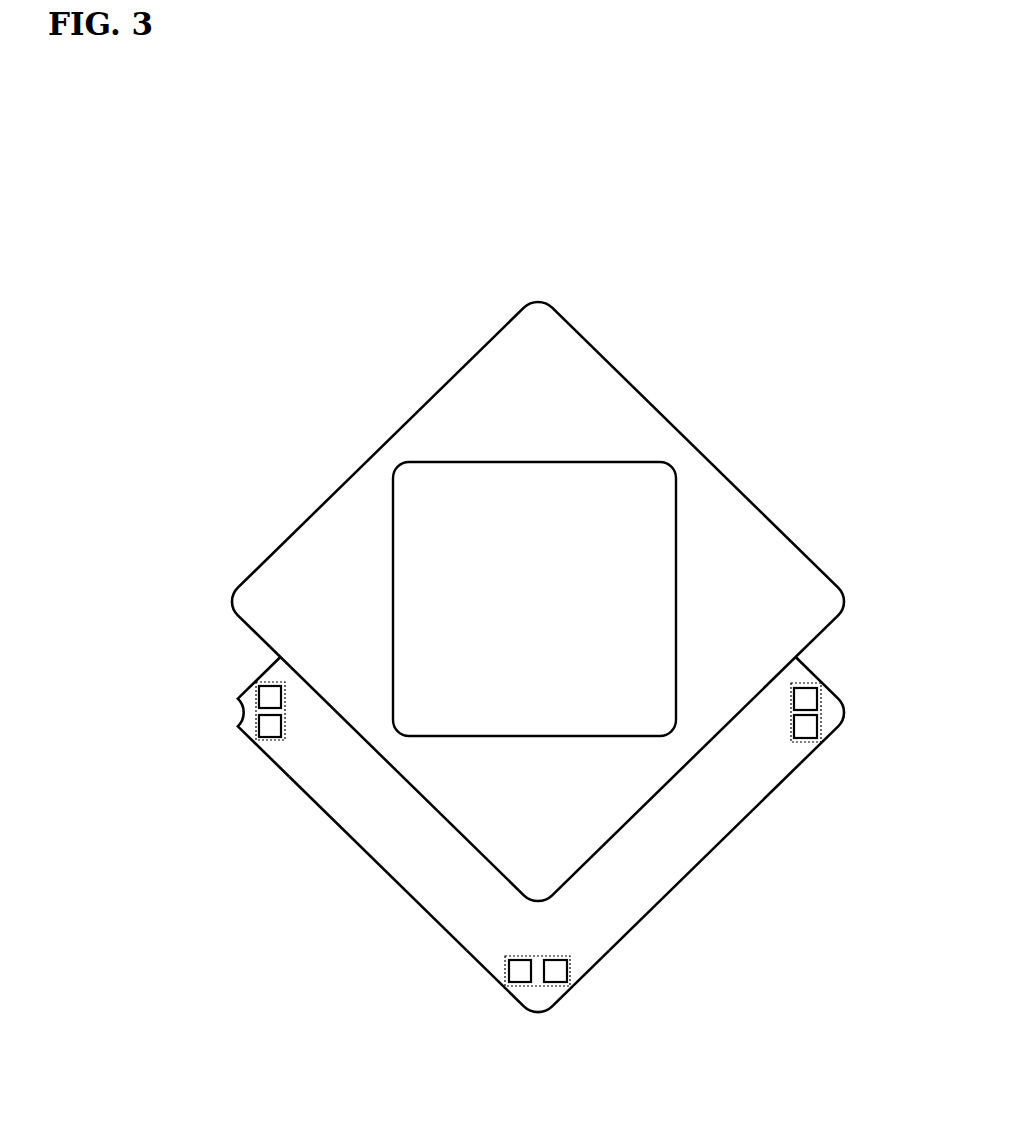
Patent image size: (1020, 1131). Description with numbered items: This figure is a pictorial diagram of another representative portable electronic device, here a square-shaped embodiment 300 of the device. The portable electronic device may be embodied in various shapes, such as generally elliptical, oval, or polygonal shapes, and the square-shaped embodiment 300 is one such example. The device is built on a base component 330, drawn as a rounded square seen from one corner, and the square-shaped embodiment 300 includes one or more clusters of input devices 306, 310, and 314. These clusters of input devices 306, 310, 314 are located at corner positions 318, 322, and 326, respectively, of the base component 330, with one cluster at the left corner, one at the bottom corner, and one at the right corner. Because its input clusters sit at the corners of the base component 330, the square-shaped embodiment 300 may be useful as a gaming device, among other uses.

The square-shaped embodiment 300 is at (826, 208).
The cluster of input devices 306 is at (265, 752).
The cluster of input devices 310 is at (809, 756).
The cluster of input devices 314 is at (491, 978).
The corner position 318 is at (233, 706).
The corner position 322 is at (542, 1012).
The corner position 326 is at (845, 718).
The base component 330 is at (378, 865).